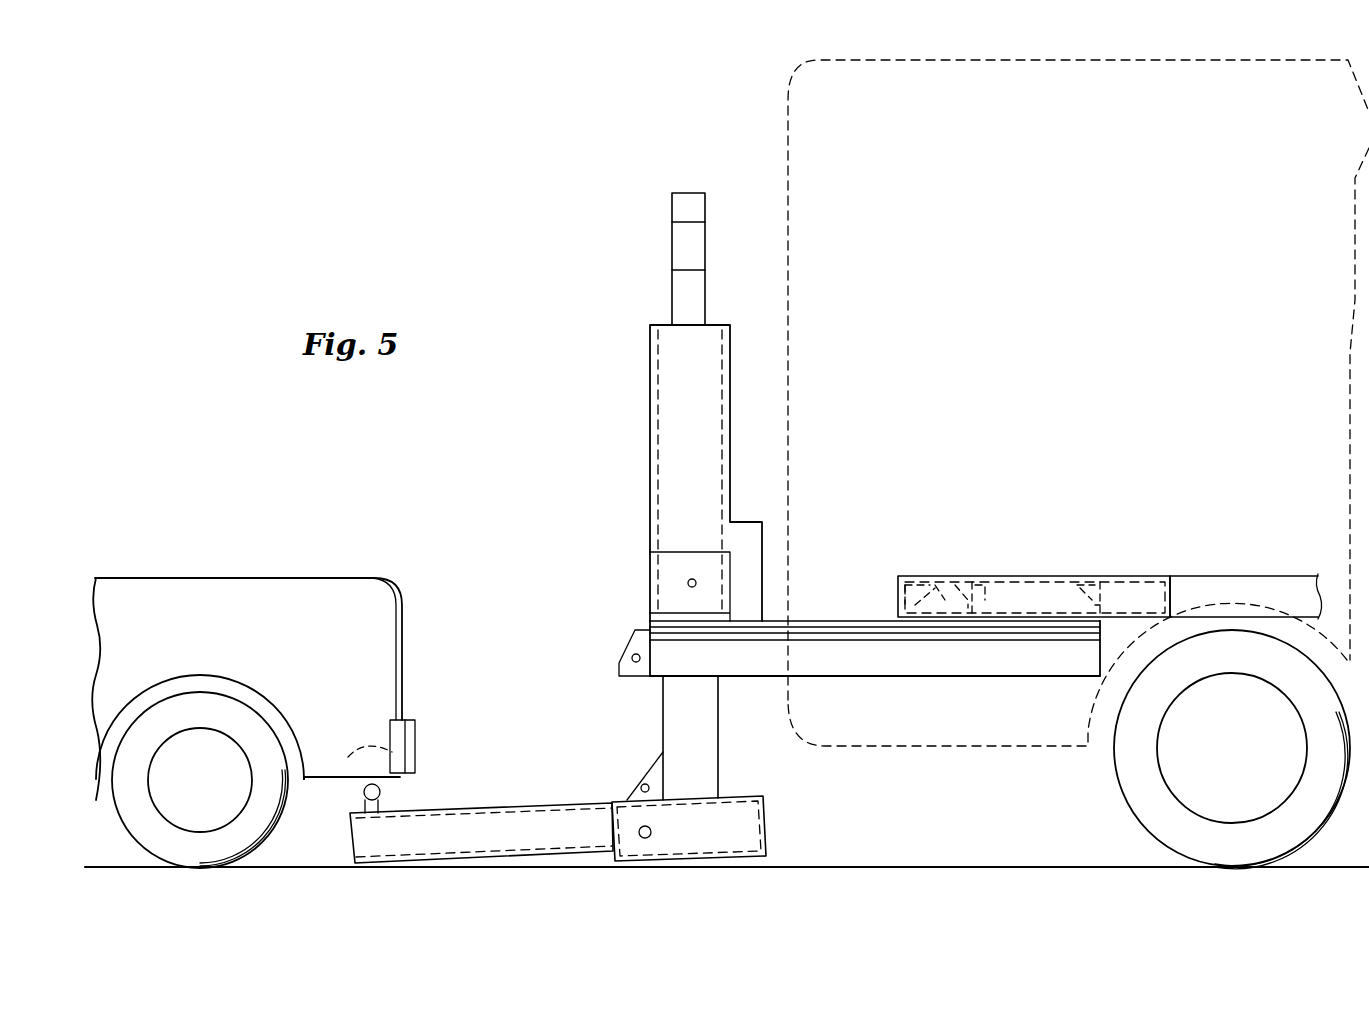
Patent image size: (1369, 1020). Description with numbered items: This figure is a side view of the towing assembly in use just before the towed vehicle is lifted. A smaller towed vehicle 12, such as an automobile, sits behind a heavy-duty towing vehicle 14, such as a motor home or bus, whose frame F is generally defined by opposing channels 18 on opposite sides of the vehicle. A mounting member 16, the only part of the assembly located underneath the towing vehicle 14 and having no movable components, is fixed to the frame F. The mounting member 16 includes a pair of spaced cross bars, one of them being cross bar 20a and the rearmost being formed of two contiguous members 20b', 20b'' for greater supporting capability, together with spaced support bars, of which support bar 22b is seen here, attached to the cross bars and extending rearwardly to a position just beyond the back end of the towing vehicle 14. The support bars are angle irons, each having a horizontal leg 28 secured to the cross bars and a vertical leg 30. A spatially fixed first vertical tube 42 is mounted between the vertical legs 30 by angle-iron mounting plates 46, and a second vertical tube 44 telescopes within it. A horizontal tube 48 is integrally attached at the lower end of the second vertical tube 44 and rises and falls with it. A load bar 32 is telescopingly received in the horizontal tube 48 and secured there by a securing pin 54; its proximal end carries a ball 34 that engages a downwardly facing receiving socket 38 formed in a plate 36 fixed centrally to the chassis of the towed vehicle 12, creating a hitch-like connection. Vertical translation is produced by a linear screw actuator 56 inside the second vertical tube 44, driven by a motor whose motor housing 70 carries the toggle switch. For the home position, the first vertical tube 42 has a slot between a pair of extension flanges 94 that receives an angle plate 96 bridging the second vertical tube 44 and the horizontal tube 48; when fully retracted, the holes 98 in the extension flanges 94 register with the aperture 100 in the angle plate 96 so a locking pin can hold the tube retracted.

The towed vehicle 12 is at (187, 592).
The towing vehicle 14 is at (920, 232).
The mounting member 16 is at (872, 575).
The channels 18 is at (1208, 583).
The cross bar 20a is at (1072, 580).
The contiguous member 20b' is at (1001, 538).
The contiguous member 20b'' is at (938, 532).
The support bar 22b is at (926, 655).
The horizontal leg 28 is at (828, 620).
The vertical leg 30 is at (817, 648).
The load bar 32 is at (512, 830).
The ball 34 is at (380, 792).
The plate 36 is at (352, 780).
The receiving socket 38 is at (415, 725).
The first vertical tube 42 is at (655, 398).
The second vertical tube 44 is at (683, 700).
The mounting plates 46 is at (672, 575).
The horizontal tube 48 is at (765, 828).
The securing pin 54 is at (648, 838).
The linear screw actuator 56 is at (675, 297).
The motor housing 70 is at (670, 238).
The extension flanges 94 is at (620, 660).
The angle plate 96 is at (627, 796).
The holes 98 is at (645, 630).
The aperture 100 is at (650, 782).
The frame F is at (1255, 524).